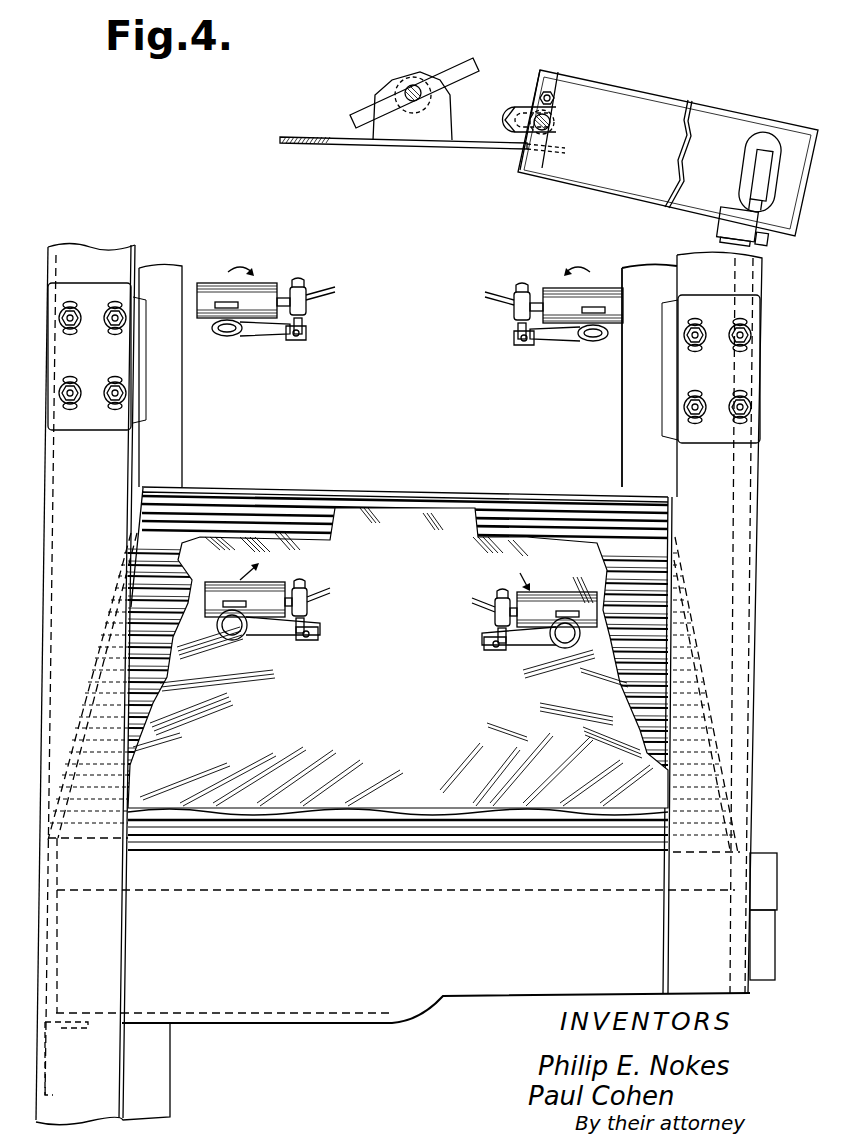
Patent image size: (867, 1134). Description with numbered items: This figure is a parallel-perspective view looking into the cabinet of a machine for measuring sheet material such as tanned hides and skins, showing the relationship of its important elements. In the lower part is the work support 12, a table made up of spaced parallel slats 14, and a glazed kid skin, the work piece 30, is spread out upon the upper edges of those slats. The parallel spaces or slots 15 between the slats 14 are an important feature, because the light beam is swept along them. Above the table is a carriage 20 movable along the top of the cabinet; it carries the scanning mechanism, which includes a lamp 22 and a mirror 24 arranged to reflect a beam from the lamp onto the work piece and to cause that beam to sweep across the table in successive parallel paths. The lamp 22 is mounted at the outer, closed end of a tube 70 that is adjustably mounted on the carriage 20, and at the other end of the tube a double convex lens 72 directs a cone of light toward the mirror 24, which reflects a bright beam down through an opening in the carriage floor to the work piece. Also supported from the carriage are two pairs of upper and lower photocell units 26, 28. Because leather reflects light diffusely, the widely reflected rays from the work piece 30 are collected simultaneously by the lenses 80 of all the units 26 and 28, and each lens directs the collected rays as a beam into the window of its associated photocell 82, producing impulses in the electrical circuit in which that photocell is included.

The work support 12 is at (583, 483).
The slats 14 is at (516, 528).
The spaces or slots 15 is at (398, 627).
The carriage 20 is at (306, 141).
The lamp 22 is at (738, 182).
The mirror 24 is at (357, 113).
The upper photocell units 26 is at (210, 278).
The lower photocell units 28 is at (215, 578).
The work piece (glazed kid skin) 30 is at (388, 800).
The tube 70 is at (573, 184).
The double convex lens 72 is at (536, 84).
The lenses 80 is at (228, 336).
The photocell 82 is at (262, 287).